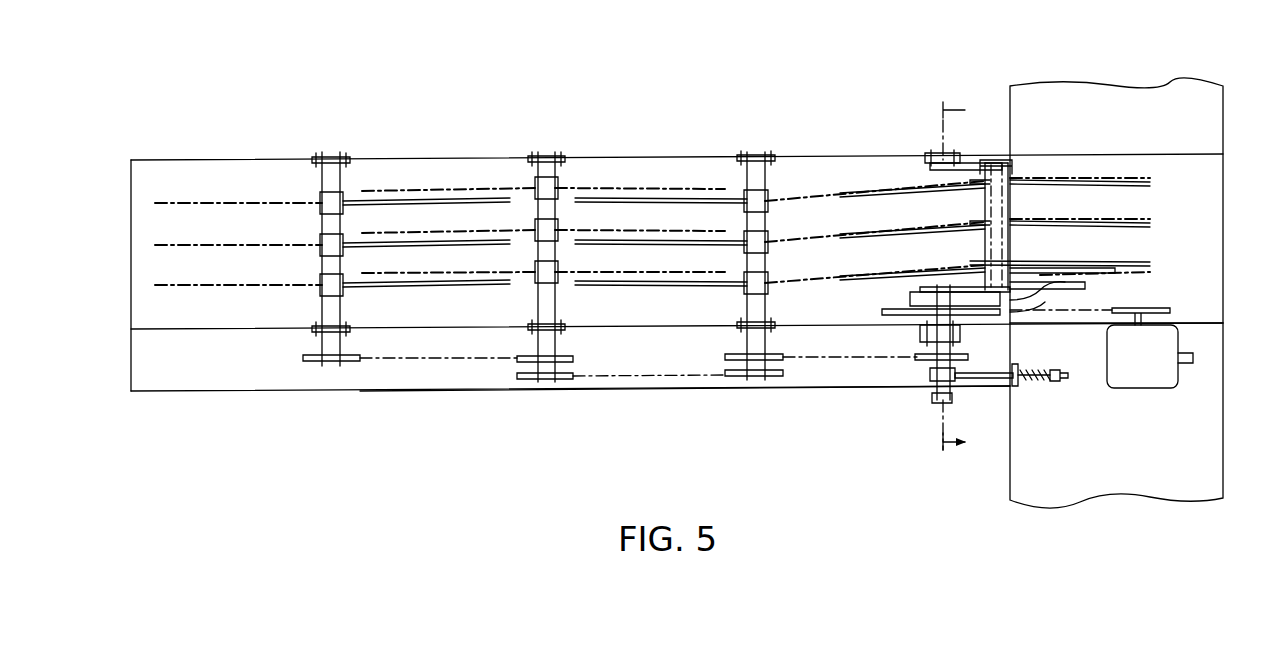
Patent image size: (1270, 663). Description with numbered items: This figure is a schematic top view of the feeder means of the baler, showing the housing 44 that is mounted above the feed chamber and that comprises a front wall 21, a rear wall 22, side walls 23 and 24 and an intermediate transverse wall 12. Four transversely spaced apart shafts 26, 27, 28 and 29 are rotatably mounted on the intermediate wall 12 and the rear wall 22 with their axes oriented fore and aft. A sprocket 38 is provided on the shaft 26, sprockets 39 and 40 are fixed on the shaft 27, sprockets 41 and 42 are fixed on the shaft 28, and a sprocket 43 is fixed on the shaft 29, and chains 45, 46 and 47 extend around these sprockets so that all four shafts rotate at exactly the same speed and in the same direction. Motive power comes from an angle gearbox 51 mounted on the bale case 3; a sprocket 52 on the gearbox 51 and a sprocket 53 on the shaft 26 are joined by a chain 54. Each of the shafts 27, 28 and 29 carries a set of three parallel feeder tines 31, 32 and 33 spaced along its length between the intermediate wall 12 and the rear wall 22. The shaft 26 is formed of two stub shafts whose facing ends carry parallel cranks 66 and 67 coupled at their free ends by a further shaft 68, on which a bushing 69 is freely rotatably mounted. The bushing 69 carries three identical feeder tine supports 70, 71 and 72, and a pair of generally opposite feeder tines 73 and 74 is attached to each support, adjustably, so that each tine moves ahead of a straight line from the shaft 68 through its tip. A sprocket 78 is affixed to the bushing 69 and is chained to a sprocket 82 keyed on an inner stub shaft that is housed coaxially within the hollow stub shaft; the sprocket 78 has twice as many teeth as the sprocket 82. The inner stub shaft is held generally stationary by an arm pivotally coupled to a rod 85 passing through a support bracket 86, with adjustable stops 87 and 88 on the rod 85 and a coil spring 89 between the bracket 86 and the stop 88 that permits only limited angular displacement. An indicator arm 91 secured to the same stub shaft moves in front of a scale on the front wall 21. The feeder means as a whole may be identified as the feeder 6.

The bale case 3 is at (1223, 500).
The feeding device 6 is at (286, 190).
The intermediate transverse wall 12 is at (652, 327).
The front wall 21 is at (645, 390).
The rear wall 22 is at (640, 142).
The side wall 23 is at (128, 365).
The side wall 24 is at (1223, 92).
The shaft 26 is at (935, 153).
The shaft 27 is at (745, 312).
The shaft 28 is at (535, 306).
The shaft 29 is at (320, 312).
The feeder tine 31 is at (432, 277).
The feeder tine 32 is at (432, 236).
The feeder tine 33 is at (432, 194).
The sprocket 38 is at (918, 358).
The sprocket 39 is at (783, 357).
The sprocket 40 is at (770, 378).
The sprocket 41 is at (567, 382).
The sprocket 42 is at (575, 358).
The sprocket 43 is at (358, 360).
The housing 44 is at (185, 157).
The chain 45 is at (858, 358).
The chain 46 is at (695, 378).
The chain 47 is at (453, 360).
The angle gearbox 51 is at (1138, 388).
The sprocket 52 is at (1190, 357).
The sprocket 53 is at (1020, 306).
The chain 54 is at (1077, 312).
The crank 66 is at (1114, 268).
The crank 67 is at (972, 163).
The further shaft 68 is at (1002, 165).
The bushing 69 is at (988, 206).
The feeder tine support 70 is at (1022, 265).
The feeder tine support 71 is at (1025, 225).
The feeder tine support 72 is at (1030, 181).
The feeder tine 73 is at (882, 184).
The feeder tine 74 is at (1080, 226).
The sprocket 78 is at (1080, 270).
The sprocket 82 is at (882, 300).
The rod 85 is at (983, 378).
The support bracket 86 is at (1018, 372).
The stop 87 is at (1012, 370).
The stop 88 is at (1060, 380).
The coil spring 89 is at (1030, 380).
The indicator arm 91 is at (932, 400).